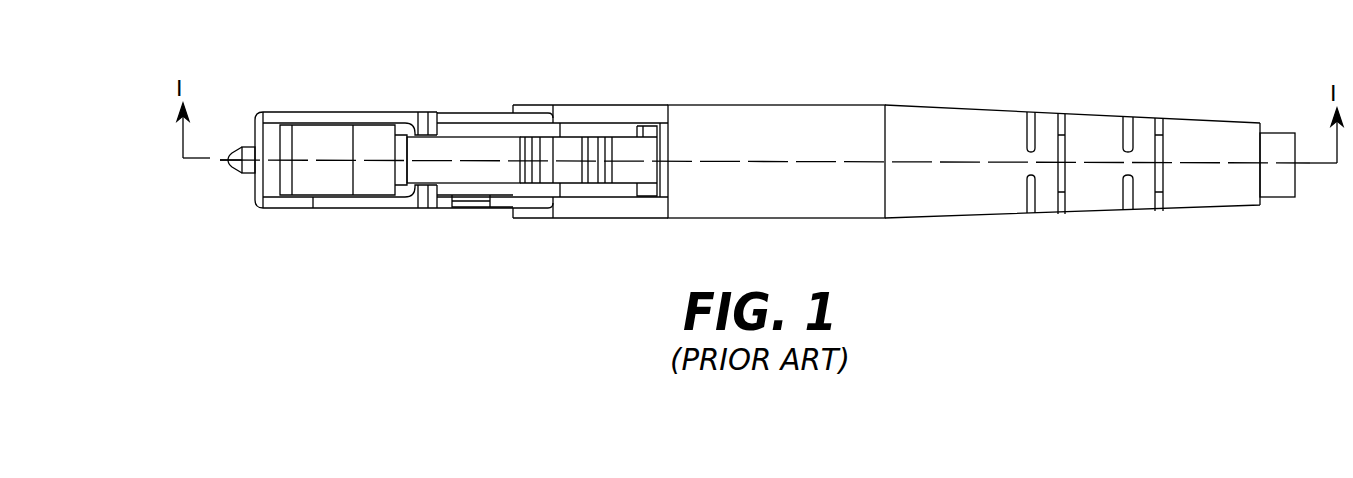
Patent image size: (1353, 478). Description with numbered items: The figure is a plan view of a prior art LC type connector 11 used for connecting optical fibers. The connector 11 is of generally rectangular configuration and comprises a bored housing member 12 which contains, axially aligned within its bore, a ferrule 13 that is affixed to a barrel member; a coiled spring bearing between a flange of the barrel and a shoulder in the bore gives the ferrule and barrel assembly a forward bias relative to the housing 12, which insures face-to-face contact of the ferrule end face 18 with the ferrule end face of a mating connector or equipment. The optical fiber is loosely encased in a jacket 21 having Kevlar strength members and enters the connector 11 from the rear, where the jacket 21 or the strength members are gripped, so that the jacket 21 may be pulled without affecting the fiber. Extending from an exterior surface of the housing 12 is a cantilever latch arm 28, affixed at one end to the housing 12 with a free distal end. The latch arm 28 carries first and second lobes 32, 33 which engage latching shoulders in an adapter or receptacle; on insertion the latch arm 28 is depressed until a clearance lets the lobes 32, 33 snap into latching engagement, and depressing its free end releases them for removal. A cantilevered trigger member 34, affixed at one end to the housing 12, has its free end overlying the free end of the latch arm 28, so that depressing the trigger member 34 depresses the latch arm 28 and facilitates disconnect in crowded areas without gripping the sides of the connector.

The LC connector 11 is at (748, 84).
The housing member 12 is at (289, 209).
The ferrule 13 is at (237, 175).
The ferrule end face 18 is at (227, 159).
The jacket 21 is at (1280, 198).
The cantilever latch arm 28 is at (483, 145).
The first lobe 32 is at (425, 120).
The second lobe 33 is at (423, 200).
The trigger member 34 is at (572, 148).